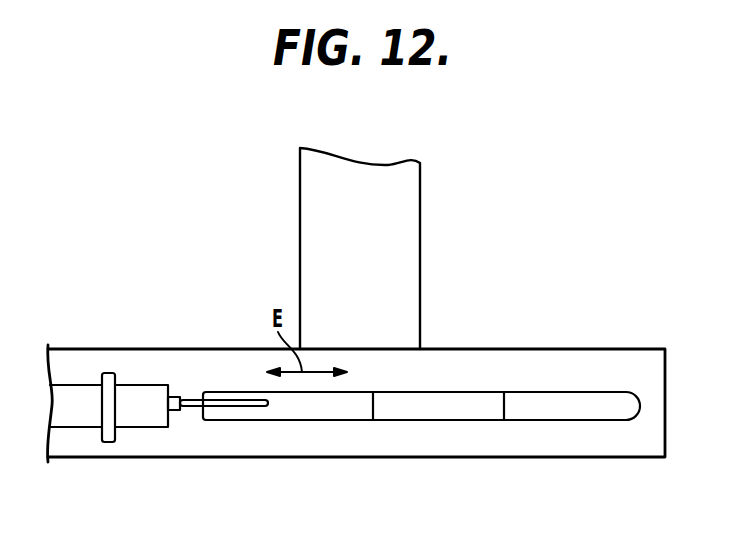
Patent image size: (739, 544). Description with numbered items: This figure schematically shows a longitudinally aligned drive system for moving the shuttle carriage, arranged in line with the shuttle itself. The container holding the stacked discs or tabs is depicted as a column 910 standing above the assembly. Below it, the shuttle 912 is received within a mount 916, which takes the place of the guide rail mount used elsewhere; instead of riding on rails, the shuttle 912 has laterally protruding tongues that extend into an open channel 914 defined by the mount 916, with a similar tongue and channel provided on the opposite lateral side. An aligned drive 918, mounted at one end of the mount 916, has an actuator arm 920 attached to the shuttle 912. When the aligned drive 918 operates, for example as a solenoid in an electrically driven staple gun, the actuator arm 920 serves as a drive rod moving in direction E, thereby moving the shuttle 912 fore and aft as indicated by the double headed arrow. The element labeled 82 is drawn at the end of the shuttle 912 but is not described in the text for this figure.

The column / support member 910 is at (418, 257).
The housing 916 is at (562, 348).
The actuator cylinder 918 is at (137, 427).
The slide block 920 is at (228, 420).
The slide bar segment 912 is at (327, 420).
The slide bar segment 914 is at (420, 412).
The rounded end member 82 is at (502, 407).